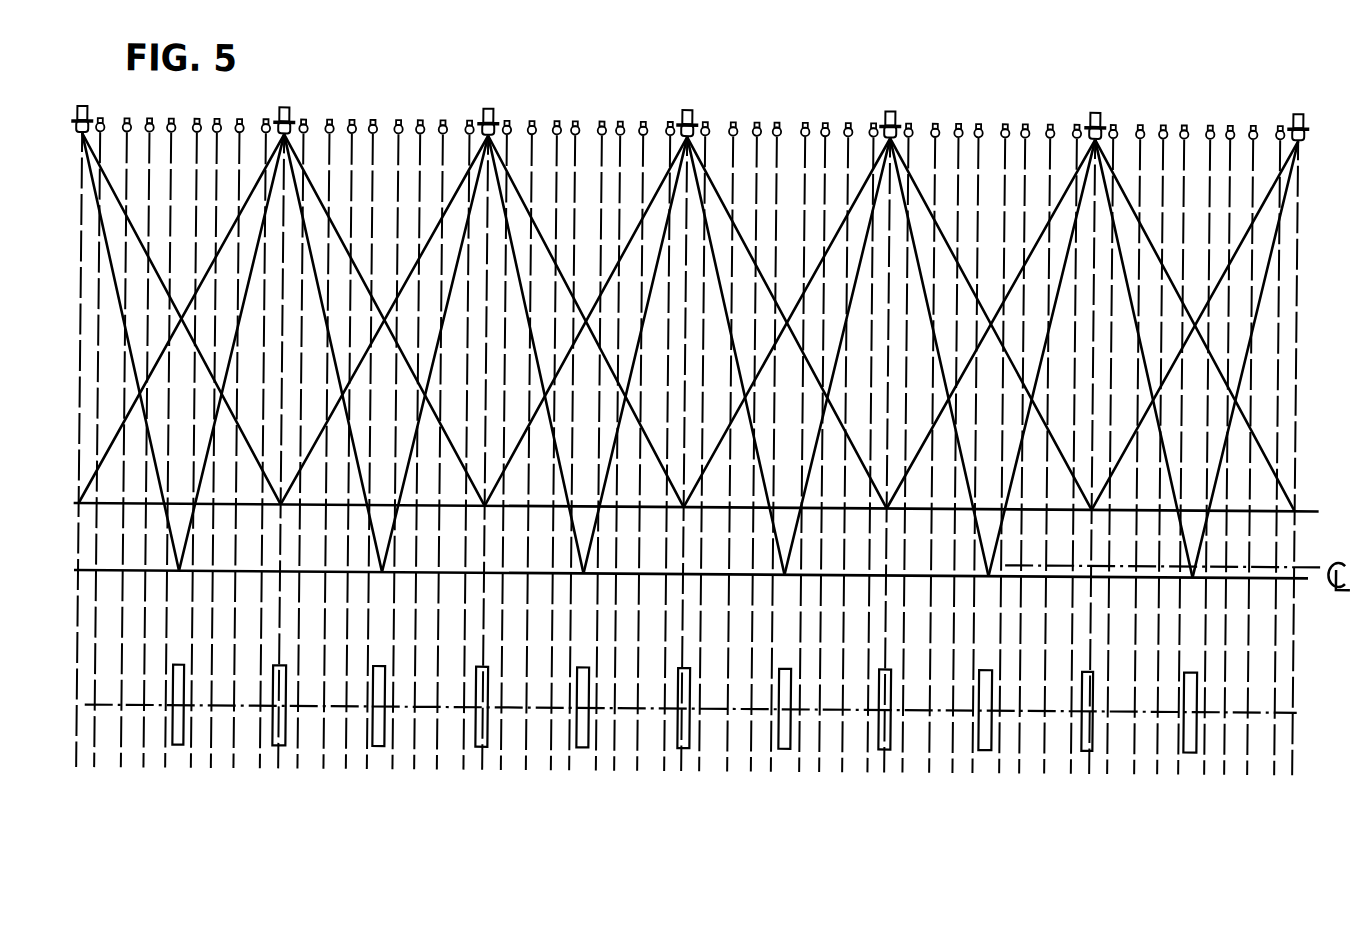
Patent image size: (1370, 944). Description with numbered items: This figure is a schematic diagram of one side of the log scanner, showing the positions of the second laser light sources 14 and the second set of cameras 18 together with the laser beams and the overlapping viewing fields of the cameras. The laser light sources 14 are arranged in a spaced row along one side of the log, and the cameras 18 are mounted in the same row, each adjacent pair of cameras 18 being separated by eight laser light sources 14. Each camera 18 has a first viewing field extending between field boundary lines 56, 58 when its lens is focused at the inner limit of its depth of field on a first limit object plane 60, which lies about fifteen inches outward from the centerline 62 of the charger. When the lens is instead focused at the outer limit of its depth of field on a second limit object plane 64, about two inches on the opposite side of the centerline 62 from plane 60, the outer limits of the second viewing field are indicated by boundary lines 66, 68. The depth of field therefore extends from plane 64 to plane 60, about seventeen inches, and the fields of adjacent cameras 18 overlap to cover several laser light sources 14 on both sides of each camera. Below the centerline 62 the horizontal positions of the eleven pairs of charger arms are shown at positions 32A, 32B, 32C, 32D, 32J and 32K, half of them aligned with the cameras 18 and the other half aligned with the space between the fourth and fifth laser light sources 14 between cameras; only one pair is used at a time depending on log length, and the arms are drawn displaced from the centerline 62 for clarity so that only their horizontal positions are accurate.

The second laser light sources 14 is at (215, 119).
The second set of cameras 18 is at (87, 107).
The field boundary line 56 is at (745, 234).
The field boundary line 58 is at (633, 240).
The first limit object plane 60 is at (1308, 502).
The centerline 62 is at (1288, 558).
The second limit object plane 64 is at (1292, 572).
The boundary line 66 is at (717, 258).
The boundary line 68 is at (637, 350).
The charger arm position 32K is at (185, 745).
The charger arm position 32J is at (286, 745).
The charger arm position 32D is at (890, 745).
The charger arm position 32C is at (992, 745).
The charger arm position 32B is at (1094, 745).
The charger arm position 32A is at (1197, 746).